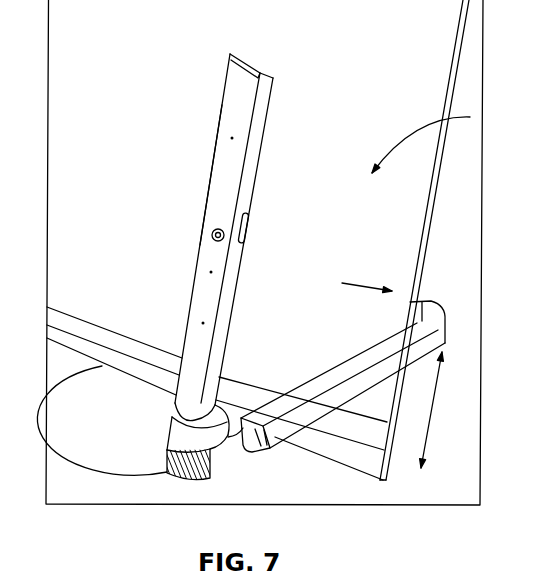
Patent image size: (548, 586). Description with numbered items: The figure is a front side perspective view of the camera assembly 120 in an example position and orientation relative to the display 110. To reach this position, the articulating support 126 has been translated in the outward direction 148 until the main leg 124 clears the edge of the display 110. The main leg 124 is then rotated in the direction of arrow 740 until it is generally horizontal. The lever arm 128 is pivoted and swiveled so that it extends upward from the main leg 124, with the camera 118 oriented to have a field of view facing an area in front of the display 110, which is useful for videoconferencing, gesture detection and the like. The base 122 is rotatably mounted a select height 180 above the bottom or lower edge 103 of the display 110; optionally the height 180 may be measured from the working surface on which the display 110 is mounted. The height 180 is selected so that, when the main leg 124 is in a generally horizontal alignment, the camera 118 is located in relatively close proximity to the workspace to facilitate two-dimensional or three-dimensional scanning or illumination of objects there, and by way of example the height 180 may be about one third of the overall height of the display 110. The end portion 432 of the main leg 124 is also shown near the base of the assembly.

The display 110 is at (274, 21).
The camera assembly 120 is at (172, 70).
The lever arm 128 is at (212, 165).
The camera 118 is at (211, 233).
The direction of arrow 740 is at (417, 128).
The outward direction 148 is at (366, 284).
The base 122 is at (425, 302).
The main leg 124 is at (327, 378).
The height 180 is at (432, 410).
The lower edge 103 is at (133, 380).
The arm end portion 432 is at (252, 452).
The articulating support 126 is at (345, 477).